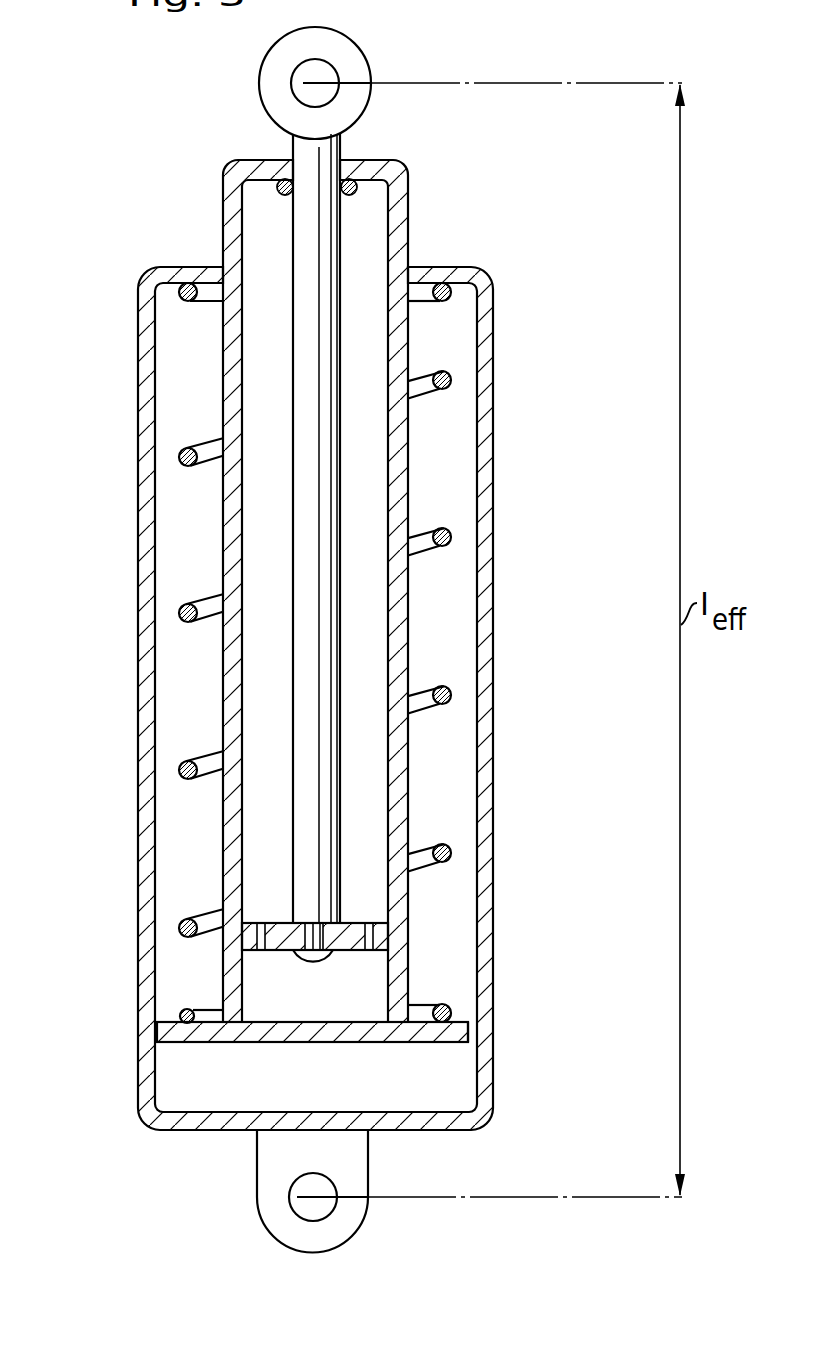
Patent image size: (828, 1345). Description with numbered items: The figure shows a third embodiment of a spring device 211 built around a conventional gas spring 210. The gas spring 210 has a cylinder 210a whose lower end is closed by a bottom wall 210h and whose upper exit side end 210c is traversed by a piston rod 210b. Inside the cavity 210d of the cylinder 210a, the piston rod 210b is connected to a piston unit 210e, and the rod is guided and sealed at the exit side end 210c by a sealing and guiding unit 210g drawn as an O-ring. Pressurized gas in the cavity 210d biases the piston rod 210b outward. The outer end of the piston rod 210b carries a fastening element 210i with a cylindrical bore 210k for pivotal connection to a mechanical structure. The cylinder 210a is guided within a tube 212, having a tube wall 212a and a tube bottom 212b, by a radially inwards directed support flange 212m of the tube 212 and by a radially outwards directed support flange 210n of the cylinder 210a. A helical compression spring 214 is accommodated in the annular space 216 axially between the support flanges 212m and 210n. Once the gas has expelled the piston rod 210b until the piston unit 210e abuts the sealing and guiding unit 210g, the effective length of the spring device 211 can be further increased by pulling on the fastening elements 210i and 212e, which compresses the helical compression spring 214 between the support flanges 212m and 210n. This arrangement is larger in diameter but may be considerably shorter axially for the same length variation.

The spring device 211 is at (116, 680).
The gas spring 210 is at (424, 766).
The cylinder 210a is at (405, 352).
The piston rod 210b is at (325, 235).
The exit side end 210c is at (222, 178).
The cavity 210d is at (378, 623).
The piston unit 210e is at (388, 937).
The sealing and guiding unit 210g is at (278, 186).
The bottom wall 210h is at (305, 1032).
The fastening element 210i is at (267, 88).
The cylindrical bore 210k is at (320, 72).
The support flange 210n is at (456, 1043).
The tube 212 is at (558, 649).
The tube wall 212a is at (485, 430).
The tube bottom 212b is at (228, 1122).
The fastening element 212e is at (344, 1218).
The support flange 212m is at (442, 277).
The helical compression spring 214 is at (451, 853).
The annular space 216 is at (457, 480).